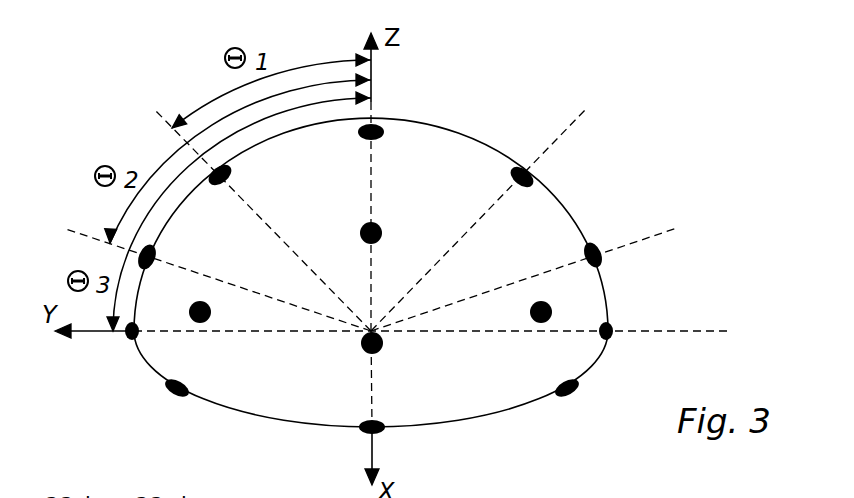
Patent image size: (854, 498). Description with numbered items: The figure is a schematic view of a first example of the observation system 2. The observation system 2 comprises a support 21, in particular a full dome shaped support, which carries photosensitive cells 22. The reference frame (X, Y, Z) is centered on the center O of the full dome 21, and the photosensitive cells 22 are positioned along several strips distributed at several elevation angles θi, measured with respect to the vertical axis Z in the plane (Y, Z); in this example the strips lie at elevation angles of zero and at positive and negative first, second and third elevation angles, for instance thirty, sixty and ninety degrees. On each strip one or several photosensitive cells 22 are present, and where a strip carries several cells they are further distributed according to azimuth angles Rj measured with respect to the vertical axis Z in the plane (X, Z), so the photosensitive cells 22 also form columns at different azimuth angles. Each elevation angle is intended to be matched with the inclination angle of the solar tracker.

The observation system 2 is at (614, 121).
The support 21 is at (440, 147).
The photosensitive cells 22 is at (534, 179).